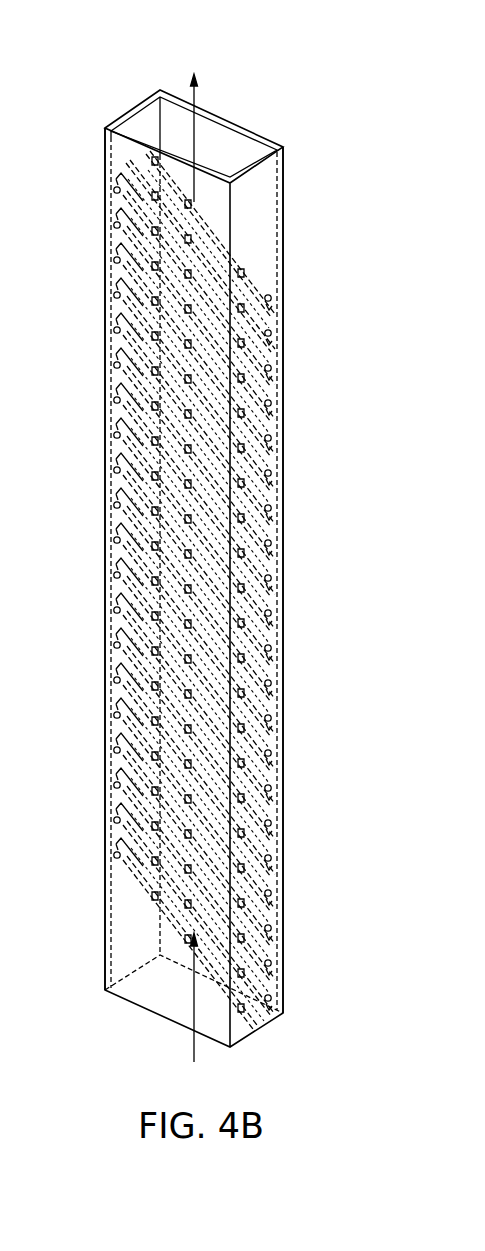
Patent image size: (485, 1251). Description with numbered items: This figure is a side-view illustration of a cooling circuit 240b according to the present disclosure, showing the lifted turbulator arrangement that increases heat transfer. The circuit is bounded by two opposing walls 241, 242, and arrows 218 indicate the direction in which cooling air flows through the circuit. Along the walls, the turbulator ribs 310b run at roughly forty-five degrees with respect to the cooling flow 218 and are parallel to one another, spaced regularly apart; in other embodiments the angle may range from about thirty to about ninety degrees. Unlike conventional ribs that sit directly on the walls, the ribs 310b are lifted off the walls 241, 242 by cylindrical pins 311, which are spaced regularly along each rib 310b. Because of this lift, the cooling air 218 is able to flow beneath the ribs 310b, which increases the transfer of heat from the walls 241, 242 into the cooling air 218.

The cooling circuit 240b is at (121, 94).
The cooling air flow 218 is at (197, 98).
The wall 241 is at (124, 935).
The wall 242 is at (286, 947).
The turbulator ribs 310b is at (270, 422).
The cylindrical pins 311 is at (252, 270).